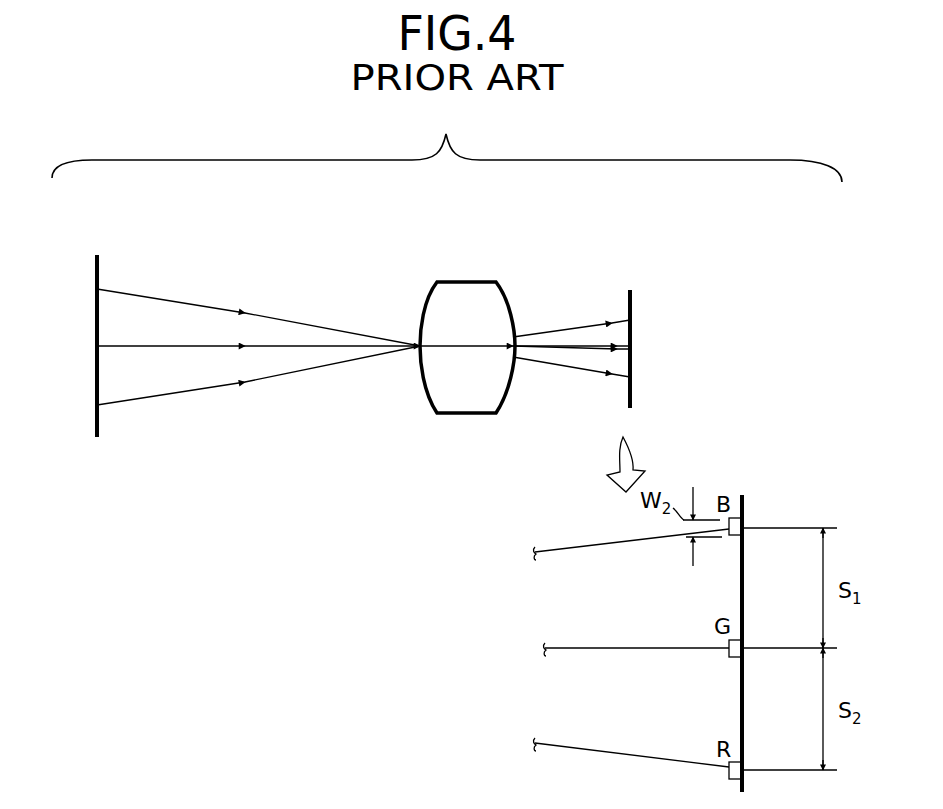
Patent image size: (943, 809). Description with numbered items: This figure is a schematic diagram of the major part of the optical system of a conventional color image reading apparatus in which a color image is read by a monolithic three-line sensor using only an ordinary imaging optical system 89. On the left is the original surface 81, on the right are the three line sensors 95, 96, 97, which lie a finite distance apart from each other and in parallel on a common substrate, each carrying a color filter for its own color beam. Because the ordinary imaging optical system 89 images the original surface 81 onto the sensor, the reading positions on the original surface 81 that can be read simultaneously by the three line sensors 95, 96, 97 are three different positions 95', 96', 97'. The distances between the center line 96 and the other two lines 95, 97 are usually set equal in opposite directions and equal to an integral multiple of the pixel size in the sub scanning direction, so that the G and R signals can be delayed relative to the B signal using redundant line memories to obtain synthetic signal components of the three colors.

The original surface 81 is at (99, 270).
The ordinary imaging optical system 89 is at (470, 285).
The line sensor 95 is at (599, 309).
The line sensor 96 is at (606, 354).
The line sensor 97 is at (601, 389).
The reading position 95' is at (225, 395).
The reading position 96' is at (327, 347).
The reading position 97' is at (225, 299).